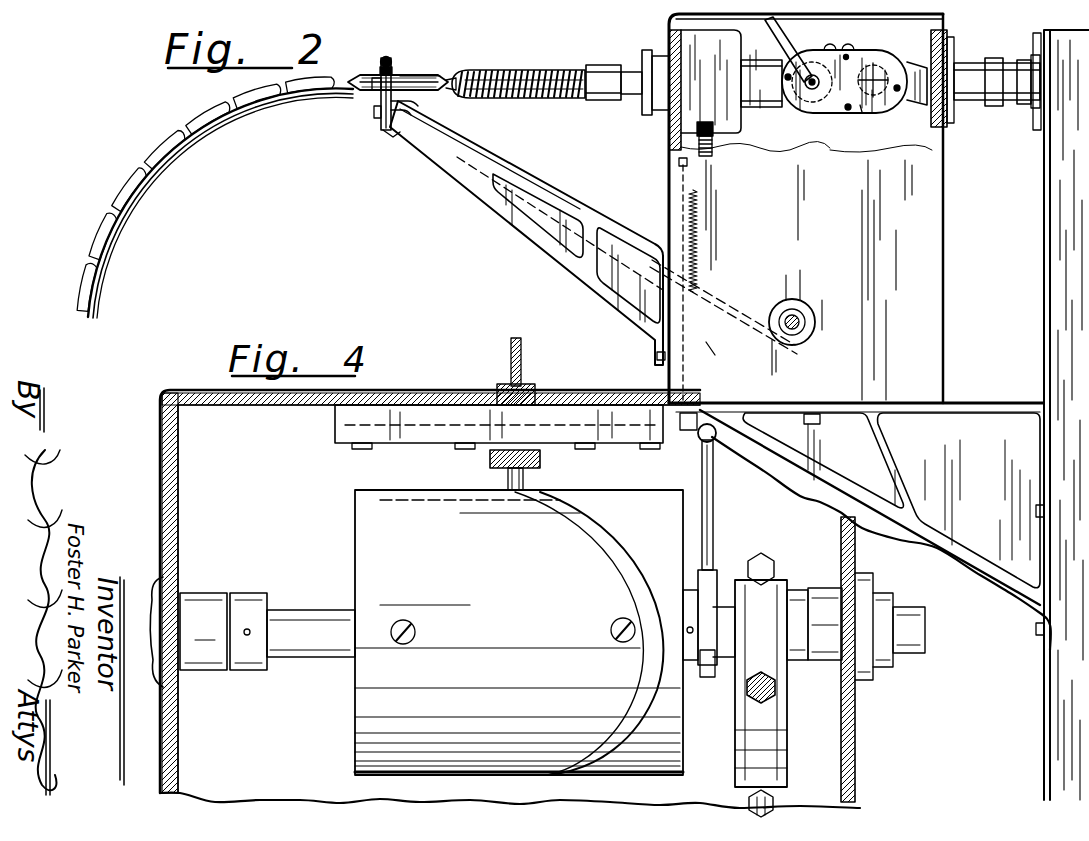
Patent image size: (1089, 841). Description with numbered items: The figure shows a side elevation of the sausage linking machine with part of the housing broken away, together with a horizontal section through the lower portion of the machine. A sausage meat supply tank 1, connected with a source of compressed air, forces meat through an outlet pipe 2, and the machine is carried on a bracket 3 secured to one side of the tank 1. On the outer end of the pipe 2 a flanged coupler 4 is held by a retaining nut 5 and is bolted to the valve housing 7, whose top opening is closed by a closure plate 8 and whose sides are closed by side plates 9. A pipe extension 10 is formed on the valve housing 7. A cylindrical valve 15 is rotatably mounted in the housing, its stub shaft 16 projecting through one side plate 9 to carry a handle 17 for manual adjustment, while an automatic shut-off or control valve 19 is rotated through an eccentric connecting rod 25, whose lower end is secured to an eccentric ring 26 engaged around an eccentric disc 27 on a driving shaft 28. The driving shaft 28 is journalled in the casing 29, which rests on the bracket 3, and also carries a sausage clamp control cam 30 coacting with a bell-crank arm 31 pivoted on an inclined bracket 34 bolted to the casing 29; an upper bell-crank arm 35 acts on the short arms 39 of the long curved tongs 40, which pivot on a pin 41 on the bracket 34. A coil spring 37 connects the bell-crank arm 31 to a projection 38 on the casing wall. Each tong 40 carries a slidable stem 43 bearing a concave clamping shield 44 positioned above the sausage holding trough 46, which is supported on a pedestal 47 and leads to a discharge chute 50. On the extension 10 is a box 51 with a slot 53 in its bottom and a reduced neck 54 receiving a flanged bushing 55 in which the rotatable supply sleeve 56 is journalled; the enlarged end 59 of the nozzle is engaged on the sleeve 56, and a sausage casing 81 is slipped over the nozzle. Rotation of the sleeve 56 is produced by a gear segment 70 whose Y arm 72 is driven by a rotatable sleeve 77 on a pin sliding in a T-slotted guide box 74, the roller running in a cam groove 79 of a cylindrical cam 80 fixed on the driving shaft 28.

In FIG. 2, the sausage meat supply tank 1 is at (1060, 244).
In FIG. 2, the outlet pipe 2 is at (1010, 106).
In FIG. 2, the bracket 3 is at (990, 405).
In FIG. 2, the flanged coupler 4 is at (952, 118).
In FIG. 2, the retaining nut 5 is at (965, 65).
In FIG. 2, the valve housing 7 is at (904, 58).
In FIG. 2, the closure plate 8 is at (772, 30).
In FIG. 2, the side plates 9 is at (862, 112).
In FIG. 2, the pipe extension 10 is at (770, 107).
In FIG. 2, the cylindrical valve 15 is at (845, 55).
In FIG. 2, the stub shaft 16 is at (806, 90).
In FIG. 2, the handle 17 is at (814, 60).
In FIG. 2, the sausage meat shut-off or control valve 19 is at (871, 65).
In FIG. 4, the eccentric connecting rod 25 is at (776, 688).
In FIG. 4, the eccentric ring 26 is at (778, 760).
In FIG. 4, the eccentric disc or cam plate 27 is at (742, 727).
In FIG. 2, the driving shaft 28 is at (842, 300).
In FIG. 4, the driving shaft 28 is at (345, 590).
In FIG. 2, the casing or box 29 is at (928, 270).
In FIG. 4, the casing or box 29 is at (190, 410).
In FIG. 4, the sausage clamp control cam 30 is at (712, 678).
In FIG. 2, the bell-crank arm 31 is at (715, 340).
In FIG. 4, the bell-crank arm 31 is at (714, 555).
In FIG. 2, the inclined bracket or arm 34 is at (562, 245).
In FIG. 4, the inclined bracket or arm 34 is at (514, 365).
In FIG. 2, the upper bell-crank arm 35 is at (410, 145).
In FIG. 2, the coil spring 37 is at (684, 222).
In FIG. 4, the coil spring 37 is at (704, 442).
In FIG. 2, the projection 38 is at (686, 190).
In FIG. 2, the short arms 39 is at (383, 122).
In FIG. 2, the long curved tongs 40 is at (395, 78).
In FIG. 2, the pivot bolt or pin 41 is at (380, 105).
In FIG. 2, the stem or pin 43 is at (386, 58).
In FIG. 2, the sausage clamping plate or shield 44 is at (425, 77).
In FIG. 2, the sausage holding trough 46 is at (372, 90).
In FIG. 2, the upright rod or pedestal 47 is at (430, 92).
In FIG. 2, the sausage discharge chute 50 is at (207, 137).
In FIG. 2, the casting or box 51 is at (720, 52).
In FIG. 2, the slot 53 is at (718, 130).
In FIG. 2, the reduced neck 54 is at (656, 40).
In FIG. 2, the flanged bushing 55 is at (662, 110).
In FIG. 2, the sausage meat supply tube or sleeve 56 is at (638, 95).
In FIG. 2, the enlarged end 59 is at (600, 65).
In FIG. 2, the gear segment 70 is at (712, 150).
In FIG. 4, the Y extension or arm 72 is at (490, 455).
In FIG. 4, the T-slotted guide box 74 is at (432, 425).
In FIG. 4, the rotatable sleeve 77 is at (508, 480).
In FIG. 4, the cam groove 79 is at (622, 525).
In FIG. 4, the cylindrical cam 80 is at (375, 548).
In FIG. 2, the sausage casing 81 is at (505, 70).